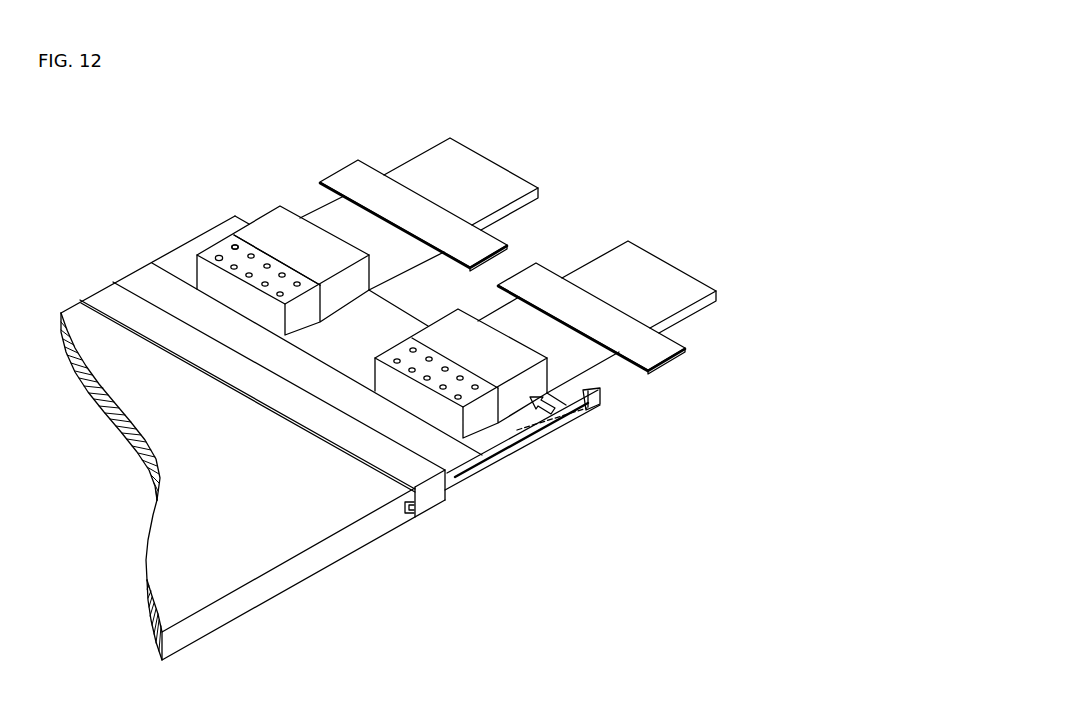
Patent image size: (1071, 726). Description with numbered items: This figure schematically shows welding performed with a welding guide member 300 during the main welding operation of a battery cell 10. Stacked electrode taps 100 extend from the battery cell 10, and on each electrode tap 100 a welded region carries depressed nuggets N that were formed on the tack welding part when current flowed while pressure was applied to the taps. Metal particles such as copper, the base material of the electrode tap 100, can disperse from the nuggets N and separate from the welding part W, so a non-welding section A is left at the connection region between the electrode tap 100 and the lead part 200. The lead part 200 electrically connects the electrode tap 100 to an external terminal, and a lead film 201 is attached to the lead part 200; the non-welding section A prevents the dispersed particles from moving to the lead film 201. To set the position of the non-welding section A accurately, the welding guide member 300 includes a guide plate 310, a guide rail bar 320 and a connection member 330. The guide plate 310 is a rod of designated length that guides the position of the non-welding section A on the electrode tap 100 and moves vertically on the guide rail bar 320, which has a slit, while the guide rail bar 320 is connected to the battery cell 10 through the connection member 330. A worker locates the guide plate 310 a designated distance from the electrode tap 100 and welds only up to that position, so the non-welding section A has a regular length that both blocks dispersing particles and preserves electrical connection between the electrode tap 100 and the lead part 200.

The battery cell 10 is at (300, 573).
The electrode tap 100 is at (195, 268).
The lead part 200 is at (482, 165).
The lead film 201 is at (352, 172).
The welding guide member 300 is at (522, 482).
The guide plate 310 is at (543, 433).
The guide rail bar 320 is at (593, 407).
The connection member 330 is at (428, 505).
The non-welding section A is at (272, 218).
The nugget N is at (218, 255).
The welding part W is at (222, 250).